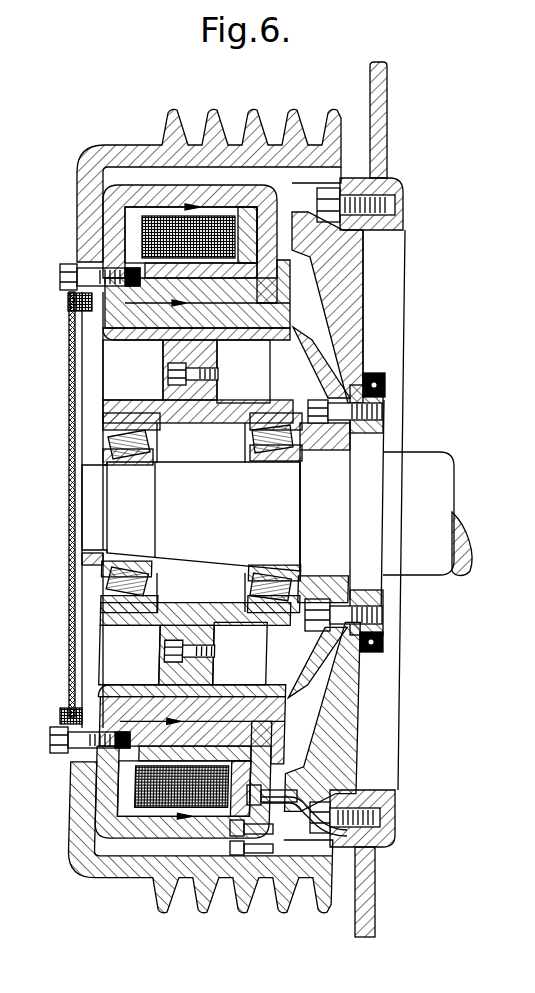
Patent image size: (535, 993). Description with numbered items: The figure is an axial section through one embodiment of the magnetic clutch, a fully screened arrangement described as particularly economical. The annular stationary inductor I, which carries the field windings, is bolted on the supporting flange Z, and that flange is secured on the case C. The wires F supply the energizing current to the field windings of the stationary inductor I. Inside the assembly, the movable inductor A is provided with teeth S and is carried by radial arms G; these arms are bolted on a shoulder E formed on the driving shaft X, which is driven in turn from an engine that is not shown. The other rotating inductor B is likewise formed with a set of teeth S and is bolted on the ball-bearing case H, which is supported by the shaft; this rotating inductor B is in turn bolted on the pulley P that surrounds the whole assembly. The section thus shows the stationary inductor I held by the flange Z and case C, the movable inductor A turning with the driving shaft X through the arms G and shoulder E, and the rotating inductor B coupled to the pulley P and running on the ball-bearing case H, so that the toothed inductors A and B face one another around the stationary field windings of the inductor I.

The pulley P is at (165, 128).
The case C is at (388, 153).
The annular stationary inductor I is at (103, 205).
The supporting flange Z is at (347, 293).
The movable inductor A is at (292, 300).
The rotating inductor B is at (123, 313).
The teeth S is at (132, 342).
The radial arms G is at (312, 360).
The ball-bearing case H is at (217, 428).
The driving shaft X is at (191, 516).
The shoulder E is at (383, 447).
The wires F is at (297, 823).